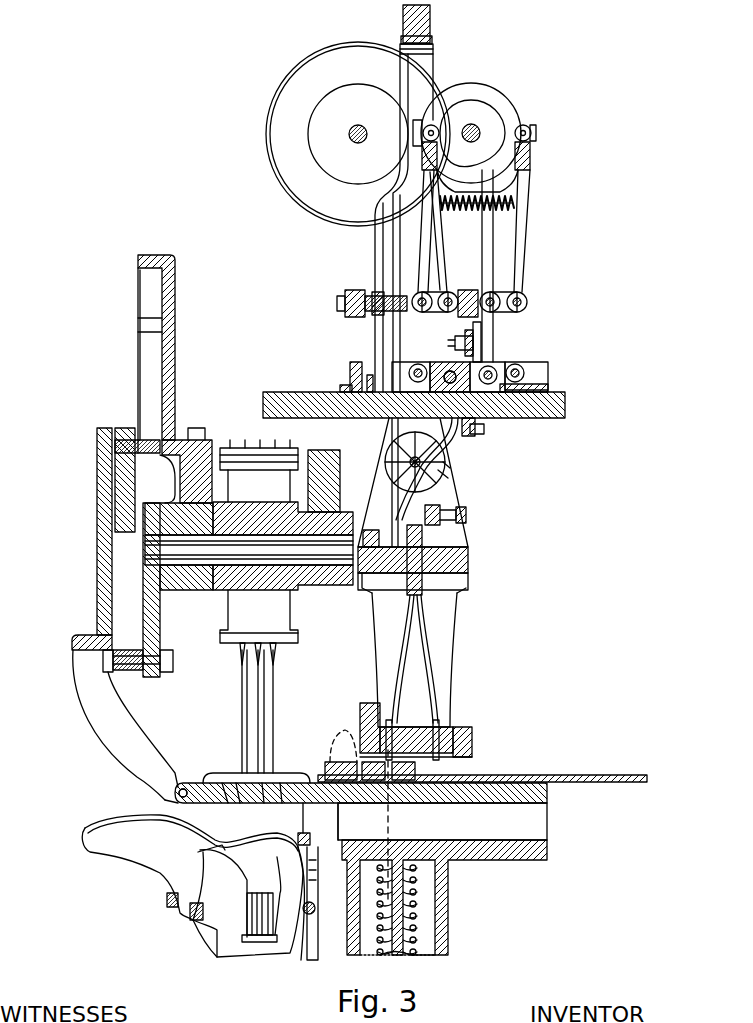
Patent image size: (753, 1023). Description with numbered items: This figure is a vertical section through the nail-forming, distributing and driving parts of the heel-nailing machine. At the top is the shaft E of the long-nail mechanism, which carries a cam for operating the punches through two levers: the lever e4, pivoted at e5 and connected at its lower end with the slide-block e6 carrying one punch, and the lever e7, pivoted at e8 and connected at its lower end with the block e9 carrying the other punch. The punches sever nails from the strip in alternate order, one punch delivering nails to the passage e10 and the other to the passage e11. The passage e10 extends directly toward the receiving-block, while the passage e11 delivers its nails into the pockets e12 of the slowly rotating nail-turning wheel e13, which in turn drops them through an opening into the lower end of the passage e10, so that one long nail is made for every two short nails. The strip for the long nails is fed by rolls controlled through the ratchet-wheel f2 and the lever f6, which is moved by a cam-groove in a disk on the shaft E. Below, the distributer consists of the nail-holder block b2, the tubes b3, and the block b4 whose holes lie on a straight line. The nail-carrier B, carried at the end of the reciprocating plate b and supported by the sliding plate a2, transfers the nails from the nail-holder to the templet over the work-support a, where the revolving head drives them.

The shaft E is at (480, 128).
The lever e4 is at (430, 232).
The pivot e5 is at (440, 285).
The lever f6 is at (490, 262).
The nail-turning wheel e13 is at (395, 255).
The lever e7 is at (520, 286).
The pivot e8 is at (528, 302).
The ratchet-wheel f2 is at (478, 340).
The slide-block e6 is at (400, 370).
The block e9 is at (530, 368).
The work-support a is at (366, 470).
The passage e11 is at (480, 432).
The passage e10 is at (455, 450).
The pockets e12 is at (446, 463).
The block b4 is at (462, 587).
The tubes b3 is at (430, 680).
The nail-holder block b2 is at (465, 730).
The plate b is at (490, 775).
The nail-carrier B is at (348, 740).
The sliding plate a2 is at (540, 805).